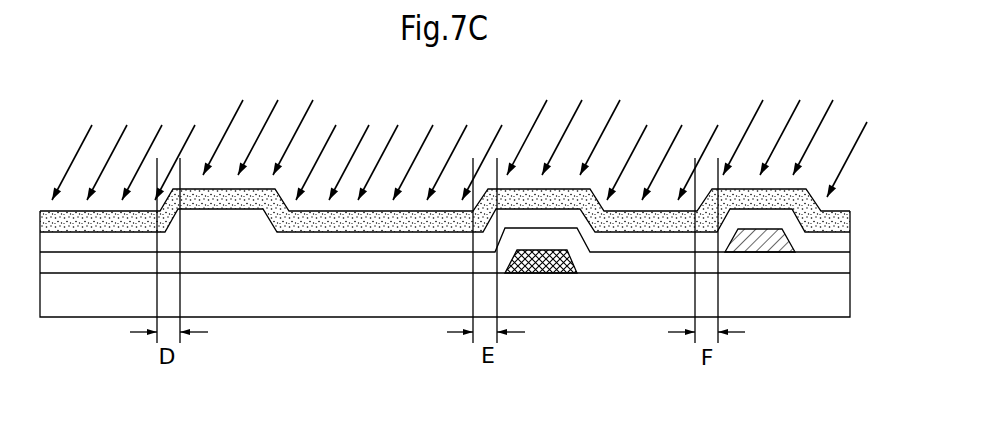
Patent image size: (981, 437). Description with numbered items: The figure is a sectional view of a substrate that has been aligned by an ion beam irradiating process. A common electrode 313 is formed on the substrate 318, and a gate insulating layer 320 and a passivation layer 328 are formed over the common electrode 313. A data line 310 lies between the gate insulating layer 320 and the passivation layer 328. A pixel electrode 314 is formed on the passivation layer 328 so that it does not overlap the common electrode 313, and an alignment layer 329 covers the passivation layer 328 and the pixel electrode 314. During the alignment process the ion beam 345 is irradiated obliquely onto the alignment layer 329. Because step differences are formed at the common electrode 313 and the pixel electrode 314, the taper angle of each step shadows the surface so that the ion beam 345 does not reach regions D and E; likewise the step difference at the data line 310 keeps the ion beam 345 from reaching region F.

The data line 310 is at (763, 253).
The common electrode 313 is at (547, 273).
The pixel electrode 314 is at (228, 217).
The substrate 318 is at (843, 304).
The gate insulating layer 320 is at (843, 268).
The passivation layer 328 is at (843, 243).
The alignment layer 329 is at (843, 221).
The ion beam 345 is at (362, 134).